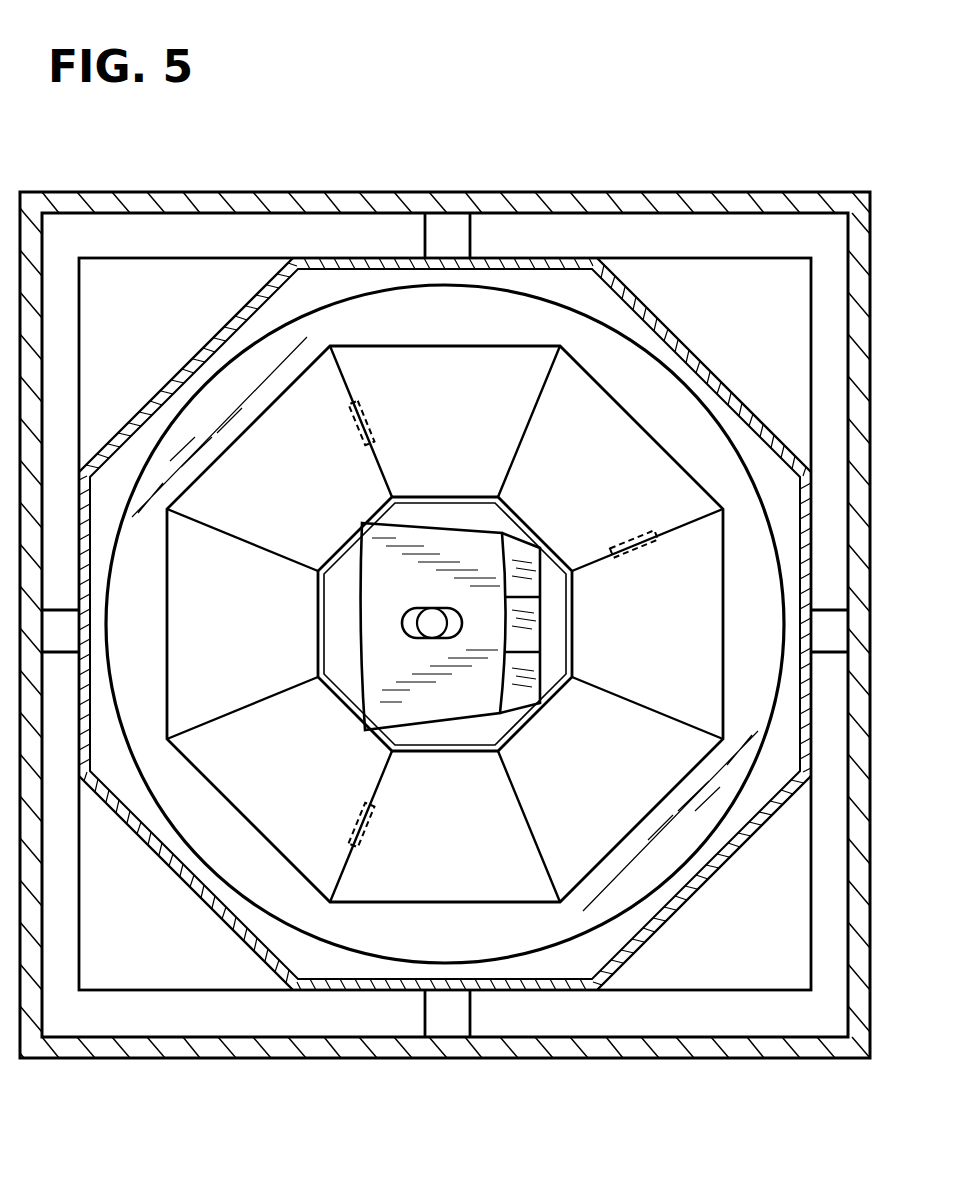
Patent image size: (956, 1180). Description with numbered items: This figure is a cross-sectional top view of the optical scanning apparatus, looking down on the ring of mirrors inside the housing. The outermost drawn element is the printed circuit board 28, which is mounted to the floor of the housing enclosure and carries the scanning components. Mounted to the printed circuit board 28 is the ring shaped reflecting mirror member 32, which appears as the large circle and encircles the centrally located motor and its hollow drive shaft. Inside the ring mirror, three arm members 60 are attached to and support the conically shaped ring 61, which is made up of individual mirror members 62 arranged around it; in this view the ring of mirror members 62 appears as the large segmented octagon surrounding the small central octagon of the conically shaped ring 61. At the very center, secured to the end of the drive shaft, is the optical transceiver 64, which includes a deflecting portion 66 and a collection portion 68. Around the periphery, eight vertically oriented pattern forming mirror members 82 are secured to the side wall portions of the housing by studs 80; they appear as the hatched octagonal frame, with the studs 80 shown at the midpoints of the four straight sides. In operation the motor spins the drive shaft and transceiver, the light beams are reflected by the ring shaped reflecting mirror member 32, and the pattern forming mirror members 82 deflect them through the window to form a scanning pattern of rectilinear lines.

The printed circuit board 28 is at (203, 994).
The ring shaped reflecting mirror member 32 is at (605, 346).
The arm member 60 is at (366, 430).
The conically shaped ring 61 is at (500, 728).
The mirror member 62 is at (612, 426).
The optical transceiver 64 is at (545, 608).
The deflecting portion 66 is at (418, 638).
The collection portion 68 is at (493, 553).
The stud 80 is at (437, 244).
The pattern forming mirror member 82 is at (210, 340).